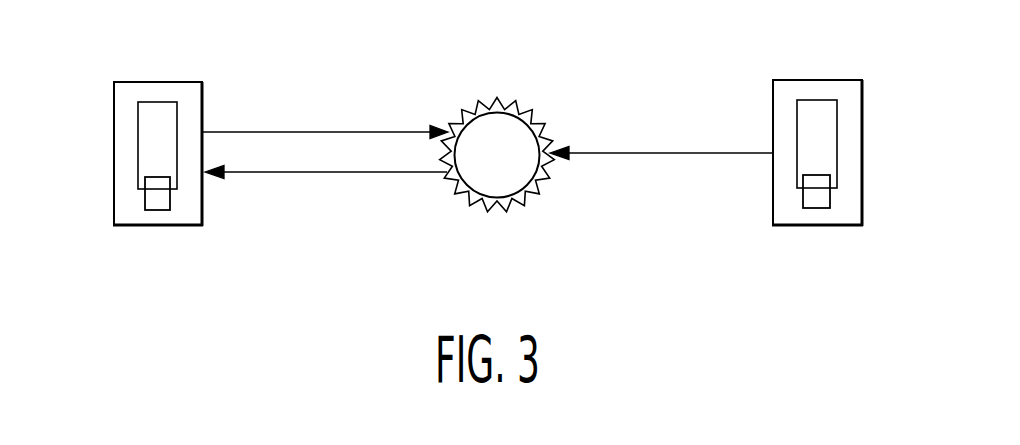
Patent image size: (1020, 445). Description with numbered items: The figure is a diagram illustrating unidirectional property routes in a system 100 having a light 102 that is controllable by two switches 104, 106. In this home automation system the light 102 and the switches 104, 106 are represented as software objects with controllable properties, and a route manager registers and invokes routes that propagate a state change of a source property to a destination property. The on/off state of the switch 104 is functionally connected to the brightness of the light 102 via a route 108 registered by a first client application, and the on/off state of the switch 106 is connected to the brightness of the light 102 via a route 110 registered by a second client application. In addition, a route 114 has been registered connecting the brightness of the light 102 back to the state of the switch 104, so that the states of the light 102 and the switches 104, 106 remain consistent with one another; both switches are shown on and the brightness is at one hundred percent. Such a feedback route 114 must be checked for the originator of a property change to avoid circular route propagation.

The system 100 is at (734, 318).
The light 102 is at (488, 127).
The switch 104 is at (125, 105).
The switch 106 is at (773, 117).
The route 108 is at (352, 130).
The route 110 is at (678, 150).
The route 114 is at (326, 207).